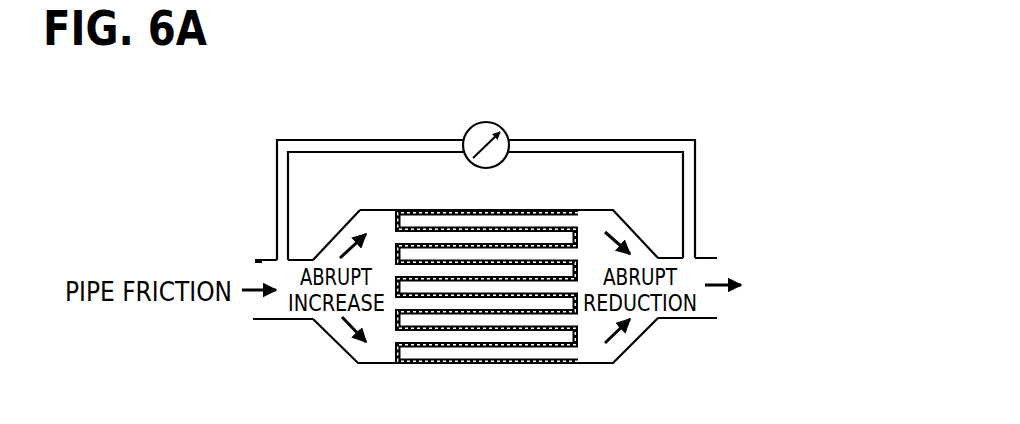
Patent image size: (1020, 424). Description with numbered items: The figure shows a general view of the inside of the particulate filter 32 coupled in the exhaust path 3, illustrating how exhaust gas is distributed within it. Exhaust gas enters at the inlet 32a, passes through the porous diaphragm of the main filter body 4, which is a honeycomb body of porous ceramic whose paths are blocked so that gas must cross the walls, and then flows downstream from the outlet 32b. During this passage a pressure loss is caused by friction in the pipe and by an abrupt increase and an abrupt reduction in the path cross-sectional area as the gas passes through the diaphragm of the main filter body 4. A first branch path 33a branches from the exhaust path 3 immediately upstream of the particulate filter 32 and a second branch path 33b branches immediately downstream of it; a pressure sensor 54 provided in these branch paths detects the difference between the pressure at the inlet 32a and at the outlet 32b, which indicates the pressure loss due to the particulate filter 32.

The exhaust path 3 is at (250, 225).
The main filter body 4 is at (527, 230).
The particulate filter 32 is at (628, 218).
The inlet 32a is at (282, 276).
The outlet 32b is at (690, 279).
The first branch path 33a is at (277, 178).
The second branch path 33b is at (697, 175).
The pressure sensor 54 is at (470, 132).